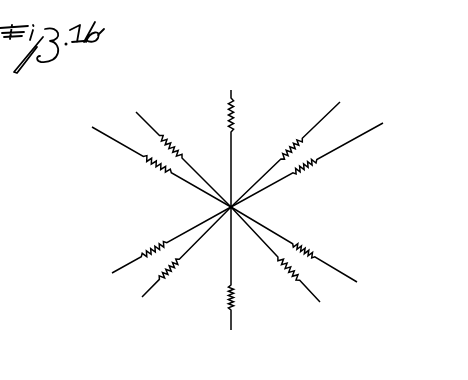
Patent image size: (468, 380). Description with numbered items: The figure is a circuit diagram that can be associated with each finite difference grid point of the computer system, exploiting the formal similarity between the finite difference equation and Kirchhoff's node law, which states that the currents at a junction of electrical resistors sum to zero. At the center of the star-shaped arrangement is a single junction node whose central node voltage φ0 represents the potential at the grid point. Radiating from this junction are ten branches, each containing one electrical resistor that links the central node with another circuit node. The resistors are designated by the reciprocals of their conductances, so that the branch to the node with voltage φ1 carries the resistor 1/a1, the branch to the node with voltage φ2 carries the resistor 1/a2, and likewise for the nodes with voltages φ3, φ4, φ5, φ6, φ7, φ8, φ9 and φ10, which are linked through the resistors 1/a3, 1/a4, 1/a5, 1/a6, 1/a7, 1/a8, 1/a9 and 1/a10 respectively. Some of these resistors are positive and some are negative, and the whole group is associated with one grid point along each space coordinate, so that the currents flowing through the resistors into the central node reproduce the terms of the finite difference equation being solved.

The central node voltage 0 is at (252, 205).
The circuit node voltage and linking resistor 1 is at (183, 147).
The circuit node voltage and linking resistor 2 is at (261, 141).
The circuit node voltage and linking resistor 3 is at (294, 148).
The circuit node voltage and linking resistor 4 is at (179, 261).
The circuit node voltage and linking resistor 5 is at (251, 277).
The circuit node voltage and linking resistor 6 is at (286, 265).
The circuit node voltage and linking resistor 7 is at (154, 158).
The circuit node voltage and linking resistor 8 is at (318, 157).
The circuit node voltage and linking resistor 9 is at (161, 248).
The circuit node voltage and linking resistor 10 is at (307, 254).